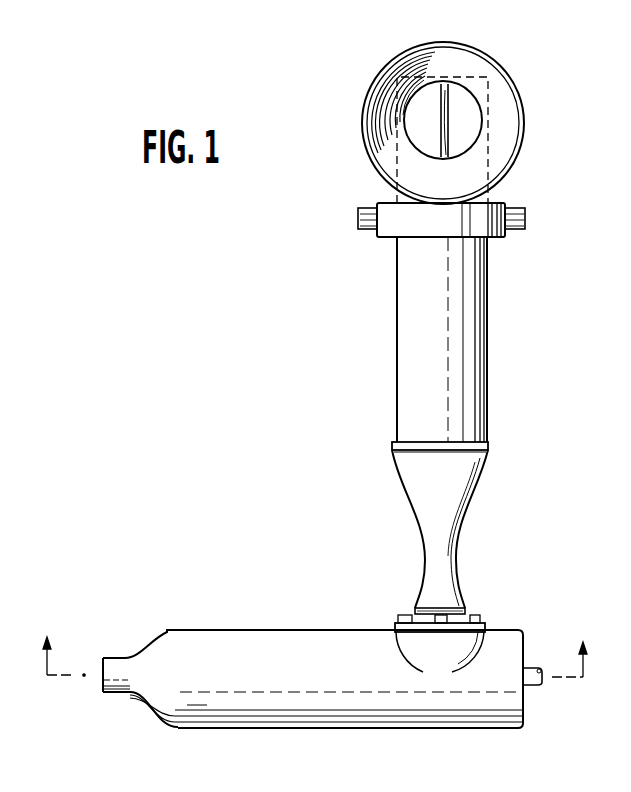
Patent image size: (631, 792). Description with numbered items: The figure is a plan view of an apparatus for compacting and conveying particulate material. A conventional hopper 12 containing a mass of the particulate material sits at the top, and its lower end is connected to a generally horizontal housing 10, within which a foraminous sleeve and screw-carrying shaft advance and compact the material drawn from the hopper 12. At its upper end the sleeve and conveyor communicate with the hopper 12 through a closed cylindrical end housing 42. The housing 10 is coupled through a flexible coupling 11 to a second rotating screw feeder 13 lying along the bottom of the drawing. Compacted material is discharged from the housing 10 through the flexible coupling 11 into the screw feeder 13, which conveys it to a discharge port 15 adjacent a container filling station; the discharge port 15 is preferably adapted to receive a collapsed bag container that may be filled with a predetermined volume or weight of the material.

The housing 10 is at (493, 322).
The flexible coupling 11 is at (448, 557).
The hopper 12 is at (513, 117).
The screw feeder 13 is at (427, 717).
The discharge port 15 is at (103, 693).
The end housing 42 is at (493, 193).